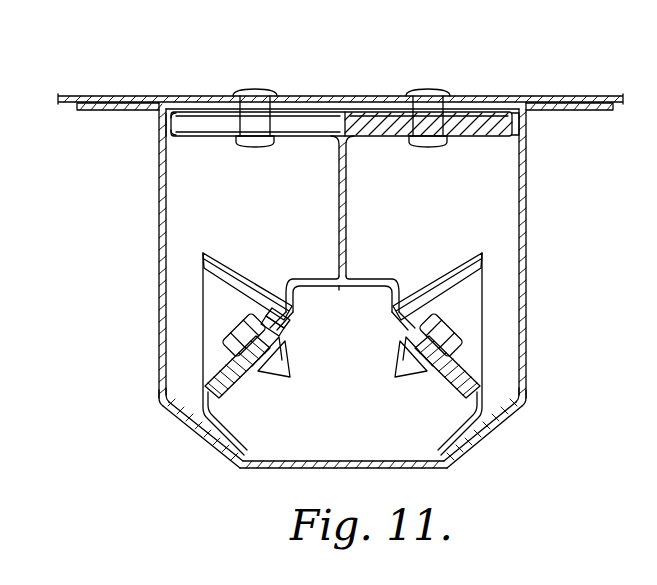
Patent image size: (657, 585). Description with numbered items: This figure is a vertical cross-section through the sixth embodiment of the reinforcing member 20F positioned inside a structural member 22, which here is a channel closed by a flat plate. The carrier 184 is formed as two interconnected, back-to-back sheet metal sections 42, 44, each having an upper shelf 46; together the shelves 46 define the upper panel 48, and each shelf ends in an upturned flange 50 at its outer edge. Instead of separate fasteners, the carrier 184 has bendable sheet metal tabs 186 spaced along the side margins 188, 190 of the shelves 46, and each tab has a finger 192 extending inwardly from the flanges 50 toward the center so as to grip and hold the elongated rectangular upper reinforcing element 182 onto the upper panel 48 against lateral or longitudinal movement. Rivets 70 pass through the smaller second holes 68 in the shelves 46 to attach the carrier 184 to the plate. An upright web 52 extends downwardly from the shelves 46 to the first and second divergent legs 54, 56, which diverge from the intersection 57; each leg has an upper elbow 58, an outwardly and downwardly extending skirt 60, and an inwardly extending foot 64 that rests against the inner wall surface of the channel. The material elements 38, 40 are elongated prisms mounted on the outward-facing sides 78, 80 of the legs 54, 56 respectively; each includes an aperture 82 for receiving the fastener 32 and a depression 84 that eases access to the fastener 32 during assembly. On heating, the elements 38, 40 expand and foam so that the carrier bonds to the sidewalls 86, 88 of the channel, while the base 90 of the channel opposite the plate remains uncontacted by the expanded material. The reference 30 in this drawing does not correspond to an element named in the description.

The reinforcing member (sixth embodiment) 20F is at (350, 224).
The structural member 22 is at (157, 303).
The rail 30 is at (182, 127).
The fastener 32 is at (270, 373).
The material element 38 is at (450, 270).
The material element 40 is at (225, 262).
The sheet metal section 42 is at (333, 192).
The sheet metal section 44 is at (348, 193).
The upper shelf 46 is at (295, 137).
The upper panel 48 is at (307, 130).
The upturned flange 50 is at (522, 118).
The upright web 52 is at (348, 250).
The first divergent leg 54 is at (450, 373).
The second divergent leg 56 is at (287, 318).
The intersection 57 is at (327, 298).
The upper elbow 58 is at (288, 290).
The skirt 60 is at (223, 393).
The foot 64 is at (221, 443).
The second hole 68 is at (273, 127).
The rivet 70 is at (253, 90).
The outward-facing side 78 is at (480, 378).
The outward-facing side 80 is at (163, 397).
The aperture 82 is at (273, 300).
The depression 84 is at (222, 290).
The sidewall 86 is at (526, 250).
The sidewall 88 is at (160, 230).
The base 90 is at (333, 468).
The upper reinforcing element 182 is at (367, 118).
The carrier 184 is at (353, 290).
The bendable sheet metal tab 186 is at (160, 108).
The side margin 188 is at (528, 137).
The side margin 190 is at (163, 122).
The finger 192 is at (187, 108).